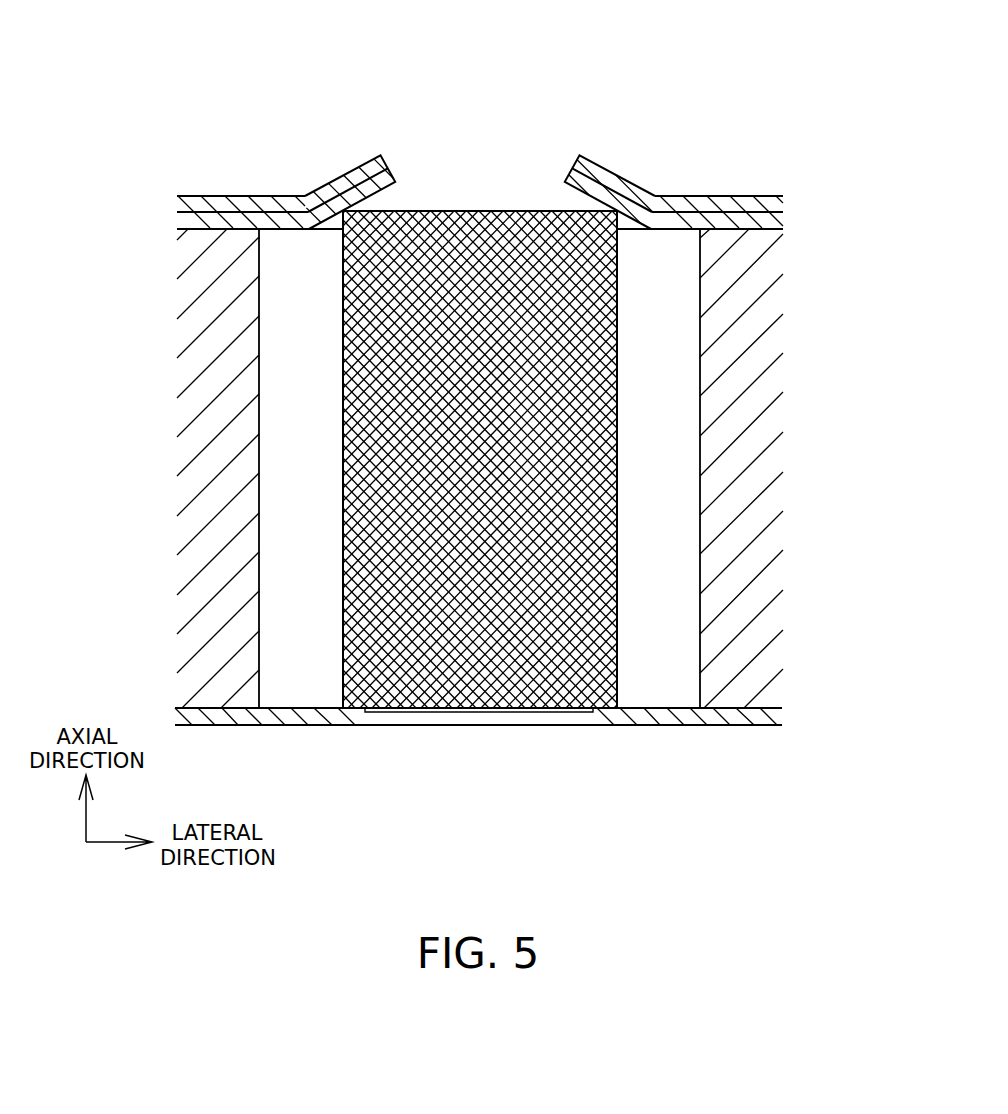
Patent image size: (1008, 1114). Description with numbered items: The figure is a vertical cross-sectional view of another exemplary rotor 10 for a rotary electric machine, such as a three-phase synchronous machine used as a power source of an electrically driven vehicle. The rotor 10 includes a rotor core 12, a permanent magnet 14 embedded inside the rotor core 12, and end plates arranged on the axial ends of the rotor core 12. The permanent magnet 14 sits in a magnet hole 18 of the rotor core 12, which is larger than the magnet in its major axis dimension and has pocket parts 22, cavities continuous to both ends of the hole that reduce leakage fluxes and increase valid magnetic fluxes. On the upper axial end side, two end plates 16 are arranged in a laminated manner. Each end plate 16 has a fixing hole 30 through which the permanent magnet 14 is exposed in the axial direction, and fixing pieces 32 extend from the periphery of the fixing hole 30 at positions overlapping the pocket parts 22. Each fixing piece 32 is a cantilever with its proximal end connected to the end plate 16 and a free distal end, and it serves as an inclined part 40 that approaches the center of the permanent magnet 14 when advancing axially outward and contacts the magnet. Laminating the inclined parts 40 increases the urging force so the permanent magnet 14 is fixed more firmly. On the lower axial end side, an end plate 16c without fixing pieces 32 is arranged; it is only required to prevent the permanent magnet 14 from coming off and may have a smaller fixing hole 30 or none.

The rotor 10 is at (441, 62).
The rotor core 12 is at (755, 451).
The permanent magnet 14 is at (481, 225).
The end plate 16 is at (742, 218).
The end plate 16c is at (737, 725).
The magnet hole 18 is at (259, 485).
The pocket part 22 is at (291, 425).
The fixing hole 30 is at (327, 226).
The fixing piece 32 is at (335, 183).
The inclined part 40 is at (620, 176).